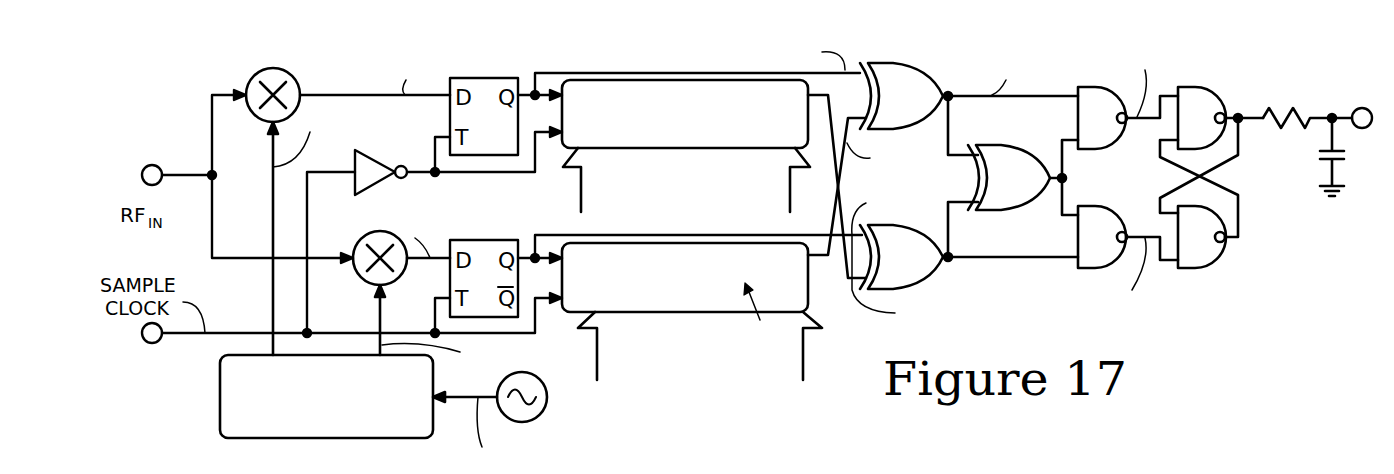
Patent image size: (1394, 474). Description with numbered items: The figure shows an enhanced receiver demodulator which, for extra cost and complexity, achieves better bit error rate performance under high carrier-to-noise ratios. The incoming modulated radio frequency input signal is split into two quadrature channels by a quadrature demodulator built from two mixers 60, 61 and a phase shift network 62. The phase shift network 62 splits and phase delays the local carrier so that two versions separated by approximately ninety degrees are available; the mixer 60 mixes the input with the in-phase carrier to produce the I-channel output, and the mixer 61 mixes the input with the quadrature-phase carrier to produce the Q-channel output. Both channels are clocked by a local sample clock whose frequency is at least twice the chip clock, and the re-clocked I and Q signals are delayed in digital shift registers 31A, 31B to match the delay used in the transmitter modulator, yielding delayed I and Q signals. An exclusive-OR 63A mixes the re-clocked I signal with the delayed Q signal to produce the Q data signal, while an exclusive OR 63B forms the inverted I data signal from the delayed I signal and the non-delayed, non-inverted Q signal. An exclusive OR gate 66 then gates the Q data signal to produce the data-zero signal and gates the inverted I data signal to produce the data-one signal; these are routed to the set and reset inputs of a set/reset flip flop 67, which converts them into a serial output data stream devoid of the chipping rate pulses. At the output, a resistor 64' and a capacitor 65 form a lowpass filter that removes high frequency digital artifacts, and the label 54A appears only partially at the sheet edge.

The mixer 60 is at (286, 72).
The mixer 61 is at (362, 238).
The phase shift network 62 is at (283, 438).
The digital shift register 31A is at (695, 80).
The digital shift register 31B is at (607, 243).
The exclusive-OR 63A is at (928, 77).
The exclusive OR 63B is at (930, 270).
The exclusive OR gate 66 is at (1032, 152).
The resistor 64' is at (1310, 93).
The capacitor 65 is at (1322, 148).
The set/reset flip flop 67 is at (1252, 267).
The partially visible reference 54A is at (1199, 468).